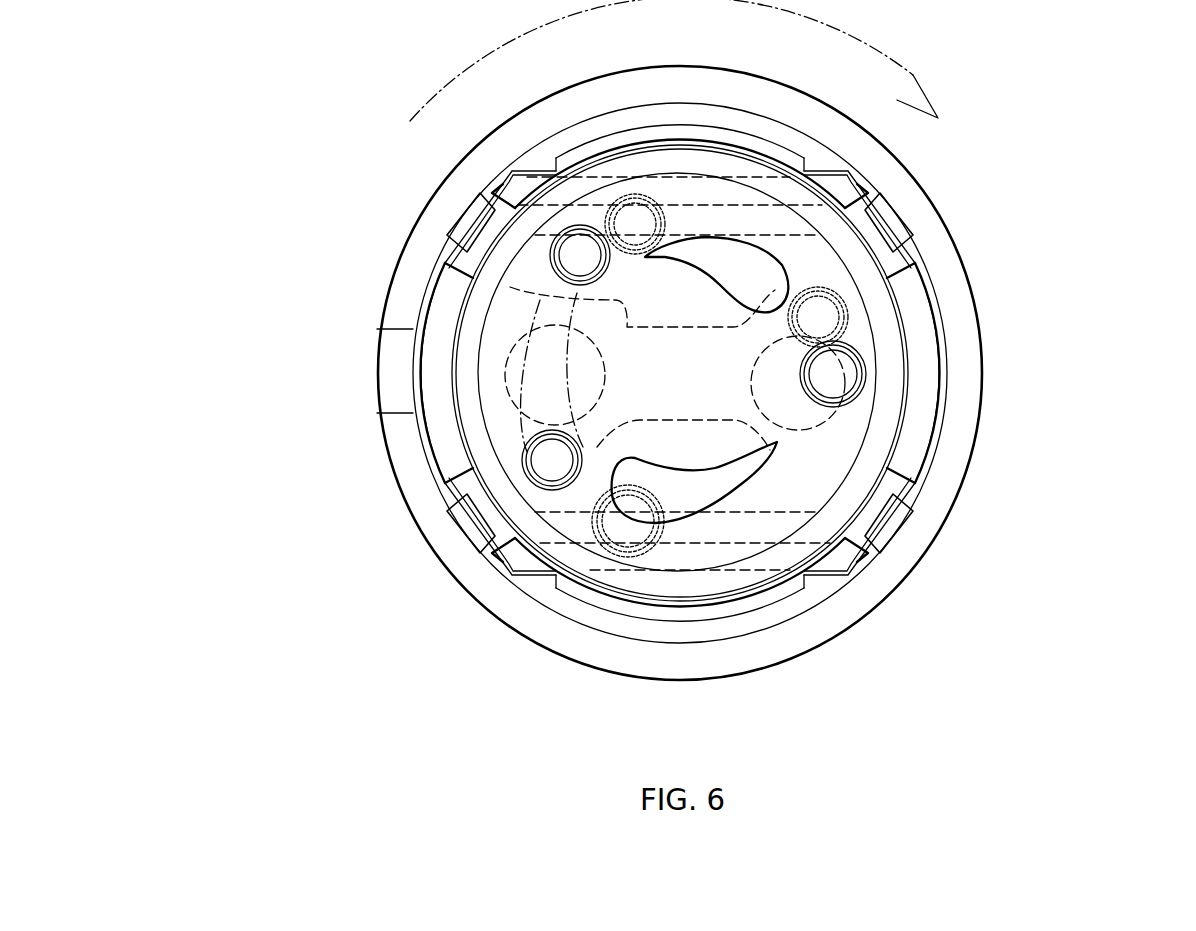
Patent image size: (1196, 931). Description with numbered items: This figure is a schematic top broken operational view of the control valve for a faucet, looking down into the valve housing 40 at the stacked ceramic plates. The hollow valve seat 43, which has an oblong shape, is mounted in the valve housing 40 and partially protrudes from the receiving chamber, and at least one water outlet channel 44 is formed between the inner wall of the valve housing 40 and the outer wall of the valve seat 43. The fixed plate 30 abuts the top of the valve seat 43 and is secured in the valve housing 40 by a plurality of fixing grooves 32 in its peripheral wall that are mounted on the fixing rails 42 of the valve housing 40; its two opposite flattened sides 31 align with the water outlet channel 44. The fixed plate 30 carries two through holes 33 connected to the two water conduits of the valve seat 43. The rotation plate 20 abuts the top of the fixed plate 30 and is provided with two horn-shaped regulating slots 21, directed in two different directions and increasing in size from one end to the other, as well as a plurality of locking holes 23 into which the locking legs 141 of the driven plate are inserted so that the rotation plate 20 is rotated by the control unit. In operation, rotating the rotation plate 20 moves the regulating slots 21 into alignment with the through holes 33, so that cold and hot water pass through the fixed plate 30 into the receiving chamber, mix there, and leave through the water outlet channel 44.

The rotation plate 20 is at (694, 381).
The regulating slots 21 is at (767, 268).
The locking holes 23 is at (470, 229).
The locking legs 141 is at (561, 347).
The fixed plate 30 is at (912, 309).
The flattened sides 31 is at (530, 573).
The fixing grooves 32 is at (994, 545).
The fixing rails 42 is at (880, 512).
The through holes 33 is at (540, 348).
The valve housing 40 is at (893, 599).
The valve seat 43 is at (693, 587).
The water outlet channel 44 is at (747, 605).